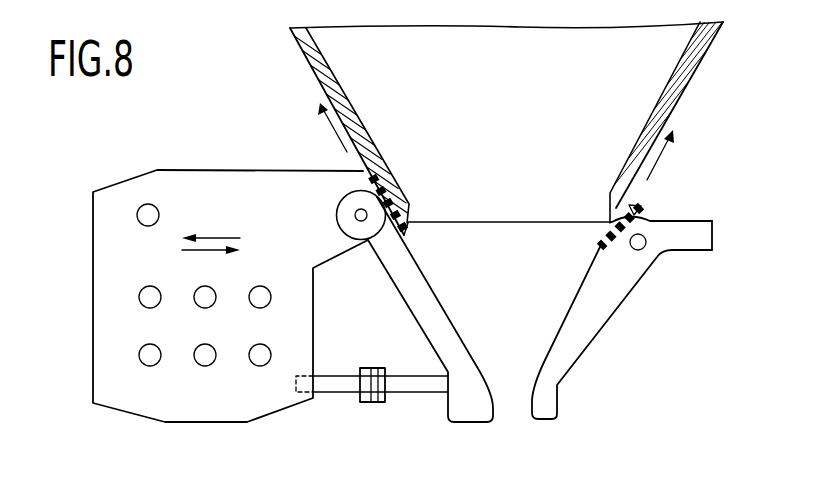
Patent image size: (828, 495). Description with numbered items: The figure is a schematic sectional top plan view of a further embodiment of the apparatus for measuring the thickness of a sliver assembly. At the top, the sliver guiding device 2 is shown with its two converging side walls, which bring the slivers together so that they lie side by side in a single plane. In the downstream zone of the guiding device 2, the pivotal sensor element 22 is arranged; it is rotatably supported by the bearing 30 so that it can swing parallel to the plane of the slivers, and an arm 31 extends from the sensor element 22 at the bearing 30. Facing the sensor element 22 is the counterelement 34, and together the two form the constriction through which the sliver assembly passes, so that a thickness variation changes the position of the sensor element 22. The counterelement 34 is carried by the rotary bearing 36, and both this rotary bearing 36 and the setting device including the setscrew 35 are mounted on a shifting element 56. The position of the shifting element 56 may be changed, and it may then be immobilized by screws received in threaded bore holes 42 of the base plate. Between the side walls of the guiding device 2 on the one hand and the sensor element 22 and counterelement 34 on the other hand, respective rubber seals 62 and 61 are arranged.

The sliver guiding device 2 is at (313, 65).
The sensor element 22 is at (553, 380).
The bearing 30 is at (645, 240).
The lever arm 31 is at (696, 243).
The counterelement 34 is at (440, 340).
The setscrew 35 is at (363, 369).
The rotary bearing 36 is at (361, 222).
The threaded bore holes 42 is at (140, 298).
The shifting element 56 is at (145, 212).
The rubber seal 61 is at (367, 169).
The rubber seal 62 is at (642, 210).